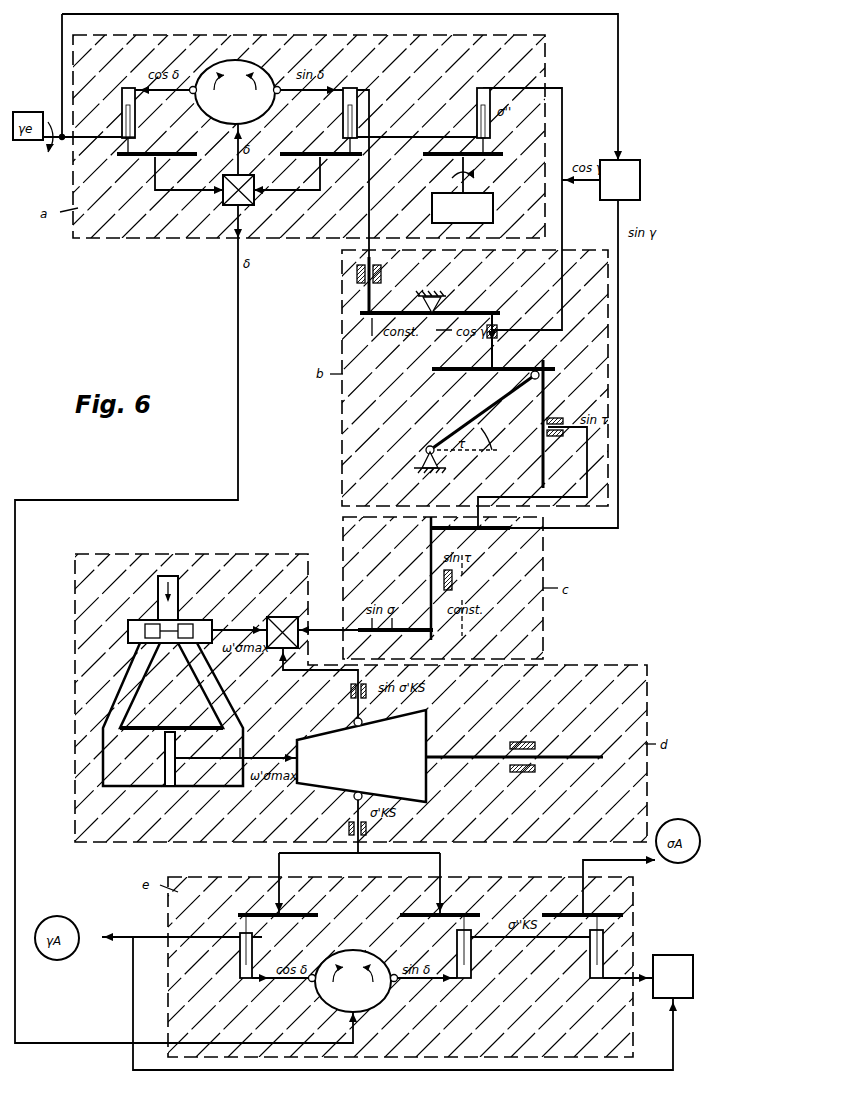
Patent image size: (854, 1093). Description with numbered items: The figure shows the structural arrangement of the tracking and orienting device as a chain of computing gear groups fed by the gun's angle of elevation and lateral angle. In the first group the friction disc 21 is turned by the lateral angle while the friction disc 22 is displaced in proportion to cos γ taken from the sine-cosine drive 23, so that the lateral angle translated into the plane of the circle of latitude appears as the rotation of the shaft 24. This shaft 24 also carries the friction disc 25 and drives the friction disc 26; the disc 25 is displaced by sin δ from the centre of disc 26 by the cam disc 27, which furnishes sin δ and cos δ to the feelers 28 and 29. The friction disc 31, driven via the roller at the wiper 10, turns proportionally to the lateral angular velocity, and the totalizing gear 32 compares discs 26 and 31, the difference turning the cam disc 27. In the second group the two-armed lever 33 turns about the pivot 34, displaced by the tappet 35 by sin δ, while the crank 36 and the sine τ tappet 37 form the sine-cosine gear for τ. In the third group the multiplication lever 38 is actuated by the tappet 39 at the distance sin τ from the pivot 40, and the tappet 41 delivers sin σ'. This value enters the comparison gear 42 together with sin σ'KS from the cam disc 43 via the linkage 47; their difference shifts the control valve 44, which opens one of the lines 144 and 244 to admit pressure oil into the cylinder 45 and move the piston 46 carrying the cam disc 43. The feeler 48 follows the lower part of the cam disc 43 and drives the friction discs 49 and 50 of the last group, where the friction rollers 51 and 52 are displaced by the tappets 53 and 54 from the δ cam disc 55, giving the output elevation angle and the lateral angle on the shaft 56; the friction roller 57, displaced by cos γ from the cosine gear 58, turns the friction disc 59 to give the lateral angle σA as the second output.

The potentiometer wiper 10 is at (135, 137).
The friction disc 21 is at (472, 158).
The friction disc 22 is at (491, 139).
The sine-cosine drive 23 is at (640, 170).
The shaft 24 is at (414, 137).
The friction disc 25 is at (343, 143).
The friction disc 26 is at (341, 158).
The cam disc 27 is at (268, 96).
The feeler 28 is at (303, 91).
The feeler 29 is at (165, 90).
The friction disc 31 is at (125, 158).
The totalizing gear 32 is at (223, 198).
The two-armed lever 33 is at (458, 312).
The pivot 34 is at (428, 306).
The tappet 35 is at (368, 299).
The crank 36 is at (463, 425).
The sine τ tappet 37 is at (545, 461).
The multiplication lever 38 is at (430, 546).
The tappet 39 is at (470, 539).
The pivot 40 is at (444, 584).
The tappet 41 is at (418, 634).
The comparison gear 42 is at (283, 617).
The cam disc 43 is at (428, 729).
The control valve 44 is at (128, 632).
The cylinder 45 is at (132, 788).
The piston 46 is at (172, 790).
The linkage 47 is at (303, 683).
The feeler 48 is at (368, 832).
The friction disc 49 is at (240, 913).
The friction disc 50 is at (415, 913).
The friction roller 51 is at (240, 953).
The friction roller 52 is at (457, 949).
The tappet 53 is at (275, 980).
The tappet 54 is at (420, 980).
The δ cam disc 55 is at (365, 1005).
The shaft 56 is at (526, 939).
The friction roller 57 is at (590, 949).
The cosine gear 58 is at (672, 955).
The friction disc 59 is at (558, 913).
The line 144 is at (103, 697).
The line 244 is at (215, 699).